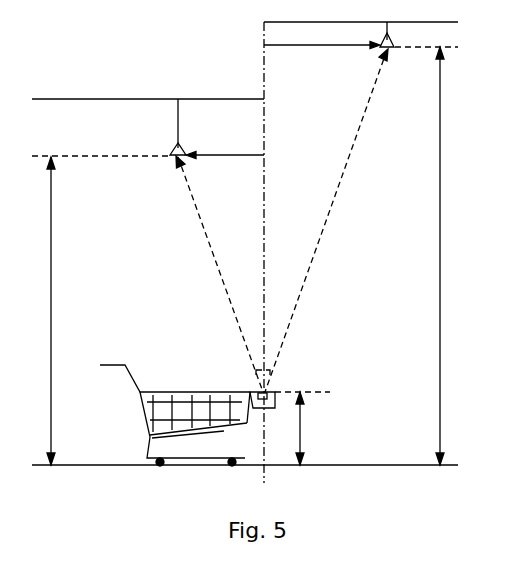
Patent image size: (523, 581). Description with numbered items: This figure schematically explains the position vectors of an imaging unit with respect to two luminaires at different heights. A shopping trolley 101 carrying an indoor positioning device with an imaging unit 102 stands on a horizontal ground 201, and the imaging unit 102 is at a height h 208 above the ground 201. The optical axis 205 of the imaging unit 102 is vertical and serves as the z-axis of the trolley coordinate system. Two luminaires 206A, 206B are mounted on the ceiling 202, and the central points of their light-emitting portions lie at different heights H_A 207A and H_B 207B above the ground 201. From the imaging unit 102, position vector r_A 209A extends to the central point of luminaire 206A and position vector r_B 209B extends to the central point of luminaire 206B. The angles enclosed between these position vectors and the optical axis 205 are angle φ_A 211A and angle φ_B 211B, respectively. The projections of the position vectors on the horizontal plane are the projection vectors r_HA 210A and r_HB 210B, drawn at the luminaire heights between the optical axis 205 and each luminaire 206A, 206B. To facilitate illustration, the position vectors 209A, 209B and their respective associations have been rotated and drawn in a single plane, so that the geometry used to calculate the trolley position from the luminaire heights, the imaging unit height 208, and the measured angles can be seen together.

The shopping cart 101 is at (165, 392).
The imaging unit 102 is at (272, 392).
The ground 201 is at (387, 465).
The ceiling 202 is at (95, 99).
The optical axis 205 is at (273, 203).
The luminaire 206A is at (393, 40).
The luminaire 206B is at (175, 147).
The height H_A 207A is at (415, 272).
The height H_B 207B is at (78, 316).
The height h 208 is at (315, 428).
The position vector r_A 209A is at (308, 266).
The position vector r_B 209B is at (221, 272).
The projection vector r_HA 210A is at (320, 48).
The projection vector r_HB 210B is at (236, 155).
The angle φ_A 211A is at (283, 338).
The angle φ_B 211B is at (246, 344).